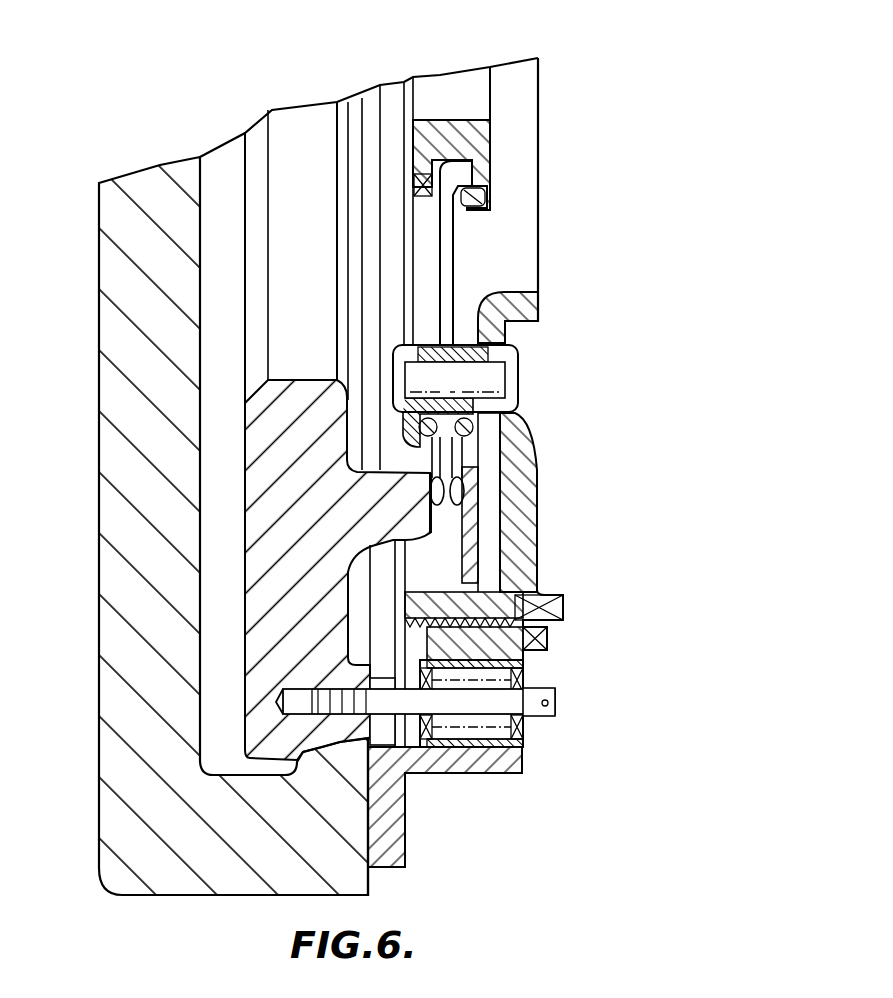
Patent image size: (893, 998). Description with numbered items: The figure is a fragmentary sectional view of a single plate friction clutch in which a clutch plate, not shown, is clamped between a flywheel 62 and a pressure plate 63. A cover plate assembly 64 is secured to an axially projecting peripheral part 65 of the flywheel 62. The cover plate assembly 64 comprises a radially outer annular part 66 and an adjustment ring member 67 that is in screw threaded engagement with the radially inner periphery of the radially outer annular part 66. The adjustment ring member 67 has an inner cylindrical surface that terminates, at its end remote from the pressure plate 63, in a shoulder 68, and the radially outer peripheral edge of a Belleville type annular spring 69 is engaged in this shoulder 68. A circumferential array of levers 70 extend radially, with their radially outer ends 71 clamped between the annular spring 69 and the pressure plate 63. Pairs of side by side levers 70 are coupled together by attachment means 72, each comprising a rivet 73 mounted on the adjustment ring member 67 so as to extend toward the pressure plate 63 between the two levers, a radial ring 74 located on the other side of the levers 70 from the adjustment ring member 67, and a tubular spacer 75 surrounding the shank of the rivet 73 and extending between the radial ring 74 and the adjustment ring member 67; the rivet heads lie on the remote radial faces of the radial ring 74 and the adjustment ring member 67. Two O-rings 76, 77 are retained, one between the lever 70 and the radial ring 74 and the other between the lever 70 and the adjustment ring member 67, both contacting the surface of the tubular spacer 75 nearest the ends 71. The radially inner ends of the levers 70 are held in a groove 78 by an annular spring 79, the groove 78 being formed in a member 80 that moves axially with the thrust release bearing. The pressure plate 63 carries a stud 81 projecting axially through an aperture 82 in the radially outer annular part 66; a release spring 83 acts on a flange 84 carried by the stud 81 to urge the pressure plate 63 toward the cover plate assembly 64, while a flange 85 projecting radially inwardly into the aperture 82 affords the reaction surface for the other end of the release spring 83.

The flywheel 62 is at (150, 547).
The pressure plate 63 is at (287, 418).
The cover plate assembly 64 is at (546, 552).
The axially projecting peripheral part 65 is at (255, 860).
The radially outer annular part 66 is at (501, 758).
The adjustment ring member 67 is at (520, 481).
The shoulder 68 is at (512, 610).
The annular spring 69 is at (466, 562).
The lever 70 is at (446, 258).
The radially outer ends 71 is at (457, 493).
The attachment means 72 is at (521, 385).
The rivet 73 is at (417, 377).
The radial ring 74 is at (407, 346).
The tubular spacer 75 is at (448, 355).
The O-ring 76 is at (441, 440).
The O-ring 77 is at (475, 430).
The groove 78 is at (473, 176).
The annular spring 79 is at (432, 194).
The member 80 is at (468, 136).
The stud 81 is at (556, 697).
The aperture 82 is at (524, 673).
The release spring 83 is at (492, 722).
The flange 84 is at (540, 733).
The flange 85 is at (422, 750).